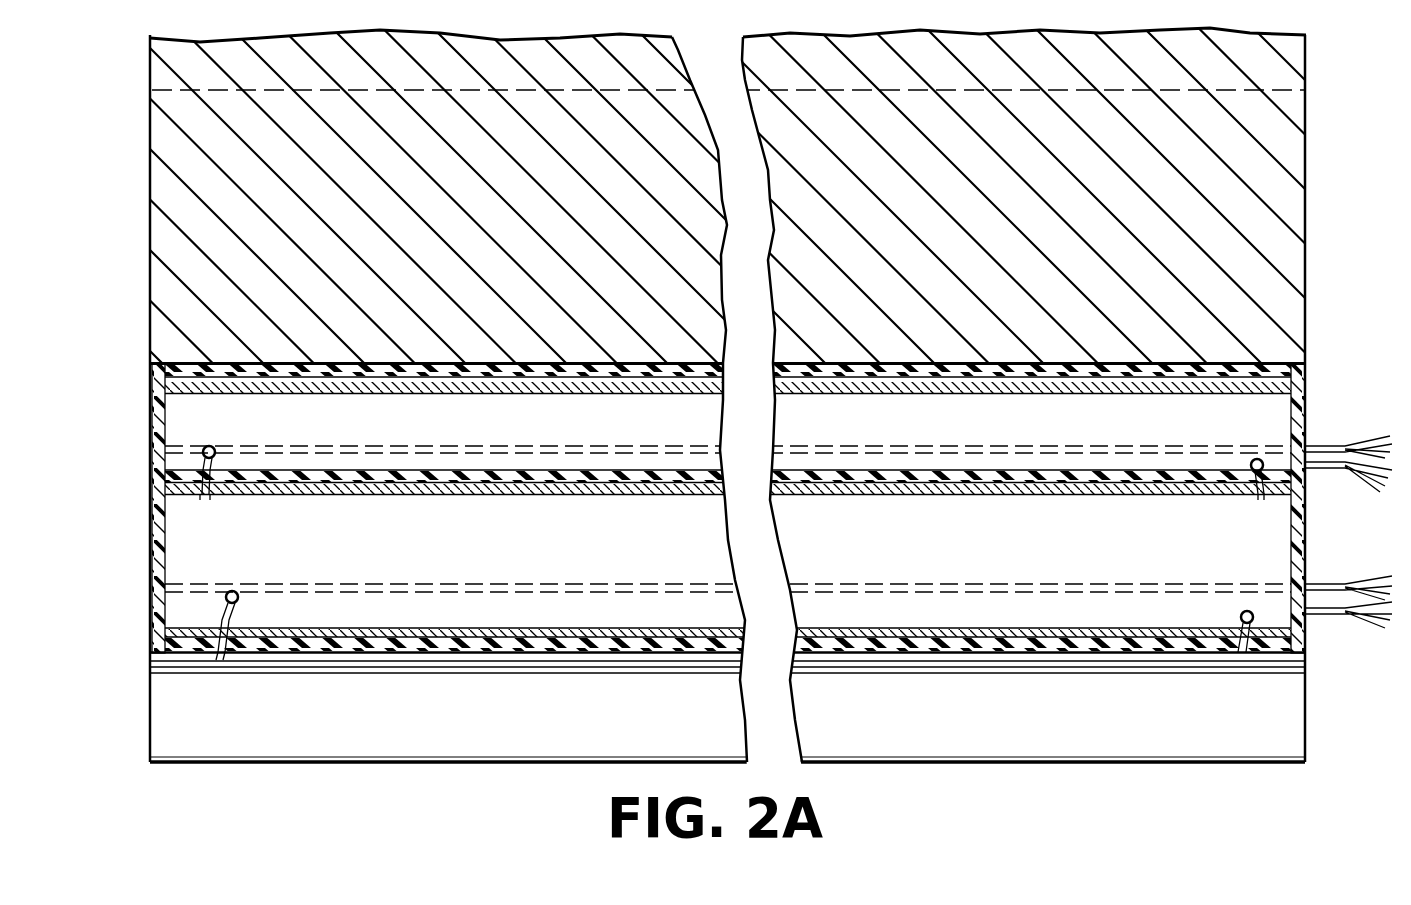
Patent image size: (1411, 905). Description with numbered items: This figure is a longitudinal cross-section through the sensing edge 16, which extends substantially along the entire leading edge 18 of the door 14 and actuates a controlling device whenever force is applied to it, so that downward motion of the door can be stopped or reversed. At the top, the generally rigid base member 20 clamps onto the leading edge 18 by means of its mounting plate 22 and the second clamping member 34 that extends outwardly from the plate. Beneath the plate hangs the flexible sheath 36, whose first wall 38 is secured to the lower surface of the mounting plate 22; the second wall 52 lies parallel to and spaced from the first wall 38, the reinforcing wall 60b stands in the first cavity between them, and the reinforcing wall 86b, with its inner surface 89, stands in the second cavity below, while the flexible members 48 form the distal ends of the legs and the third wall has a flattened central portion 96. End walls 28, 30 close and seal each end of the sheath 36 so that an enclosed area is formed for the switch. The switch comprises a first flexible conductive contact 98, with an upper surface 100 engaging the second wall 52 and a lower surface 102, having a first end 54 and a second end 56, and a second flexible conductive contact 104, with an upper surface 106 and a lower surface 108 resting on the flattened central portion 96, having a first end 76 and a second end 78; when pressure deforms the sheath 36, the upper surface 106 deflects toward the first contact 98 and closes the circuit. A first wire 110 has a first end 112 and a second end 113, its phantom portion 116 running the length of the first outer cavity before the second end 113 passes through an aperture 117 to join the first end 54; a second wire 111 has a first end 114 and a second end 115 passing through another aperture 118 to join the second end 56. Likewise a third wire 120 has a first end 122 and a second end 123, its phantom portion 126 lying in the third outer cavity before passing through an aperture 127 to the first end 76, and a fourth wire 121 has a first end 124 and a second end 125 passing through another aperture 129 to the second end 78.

The door 14 is at (1143, 73).
The second elongated clamping member 34 is at (1245, 172).
The leading edge 18 is at (143, 312).
The mounting plate 22 is at (728, 365).
The first wall 38 is at (427, 390).
The base member 20 is at (1322, 383).
The end wall 28 is at (158, 541).
The end wall 30 is at (1310, 546).
The sensing edge 16 is at (140, 621).
The flexible members 48 is at (1285, 715).
The sheath 36 is at (992, 772).
The first cavity reinforcing wall 60b is at (360, 437).
The second cavity reinforcing wall 86b is at (410, 547).
The inner surface 89 is at (805, 550).
The portion of first wire 116 is at (605, 445).
The portion of third wire 126 is at (607, 585).
The second wall 52 is at (728, 479).
The upper surface of first contact 100 is at (505, 480).
The first contact 98 is at (972, 483).
The lower surface of first contact 102 is at (545, 495).
The upper surface of second contact 106 is at (728, 624).
The second contact 104 is at (883, 630).
The flattened central portion 96 is at (458, 653).
The lower surface of second contact 108 is at (590, 656).
The second end of second contact 78 is at (1228, 652).
The first wire 110 is at (190, 450).
The second end of first wire 113 is at (200, 455).
The aperture 117 is at (152, 434).
The first end of first contact 54 is at (237, 495).
The third wire 120 is at (217, 600).
The second end of third wire 123 is at (242, 604).
The aperture 127 is at (239, 594).
The first end of second contact 76 is at (220, 653).
The aperture 118 is at (1254, 458).
The second end of second wire 115 is at (1250, 463).
The second end of first contact 56 is at (1268, 494).
The aperture 129 is at (1221, 623).
The second end of fourth wire 125 is at (1192, 606).
The first end of first wire 112 is at (1338, 446).
The second wire 111 is at (1322, 469).
The first end of second wire 114 is at (1350, 470).
The first end of third wire 122 is at (1332, 585).
The first end of fourth wire 124 is at (1336, 616).
The fourth wire 121 is at (1312, 626).